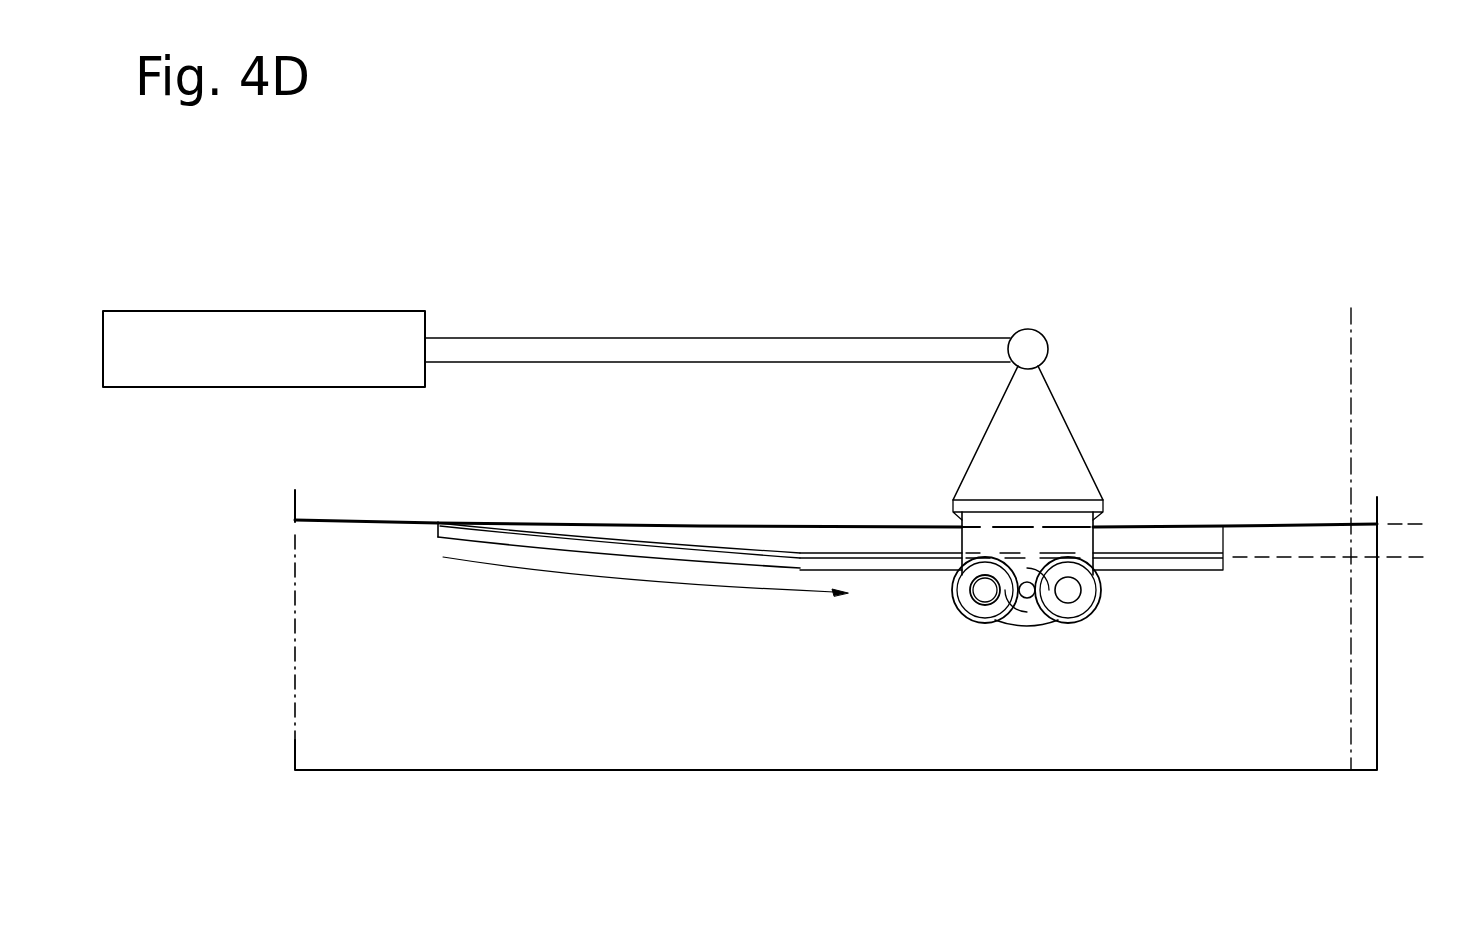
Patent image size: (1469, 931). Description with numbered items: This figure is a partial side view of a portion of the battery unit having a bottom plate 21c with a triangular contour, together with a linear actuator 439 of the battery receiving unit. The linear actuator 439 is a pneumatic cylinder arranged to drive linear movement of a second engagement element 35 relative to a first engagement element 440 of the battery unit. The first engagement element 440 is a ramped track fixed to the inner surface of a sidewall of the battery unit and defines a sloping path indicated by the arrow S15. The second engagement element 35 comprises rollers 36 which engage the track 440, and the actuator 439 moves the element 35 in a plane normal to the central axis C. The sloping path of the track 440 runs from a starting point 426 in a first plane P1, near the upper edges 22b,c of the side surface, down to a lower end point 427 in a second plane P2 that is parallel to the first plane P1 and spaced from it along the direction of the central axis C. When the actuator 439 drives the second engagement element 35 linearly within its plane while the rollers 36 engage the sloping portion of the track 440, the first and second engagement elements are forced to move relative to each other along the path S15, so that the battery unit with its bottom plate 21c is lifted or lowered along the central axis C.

The linear actuator 439 is at (390, 345).
The upper edge 22b,c is at (405, 520).
The ramp 426 is at (437, 537).
The arrow S15 is at (557, 577).
The ramped track 440 is at (693, 557).
The guide rail 427 is at (802, 570).
The second engagement element 35 is at (1030, 507).
The rollers 36 is at (958, 605).
The bottom plate 21c is at (827, 771).
The first plane P1 is at (1427, 515).
The second plane P2 is at (1349, 568).
The central axis C is at (1352, 348).